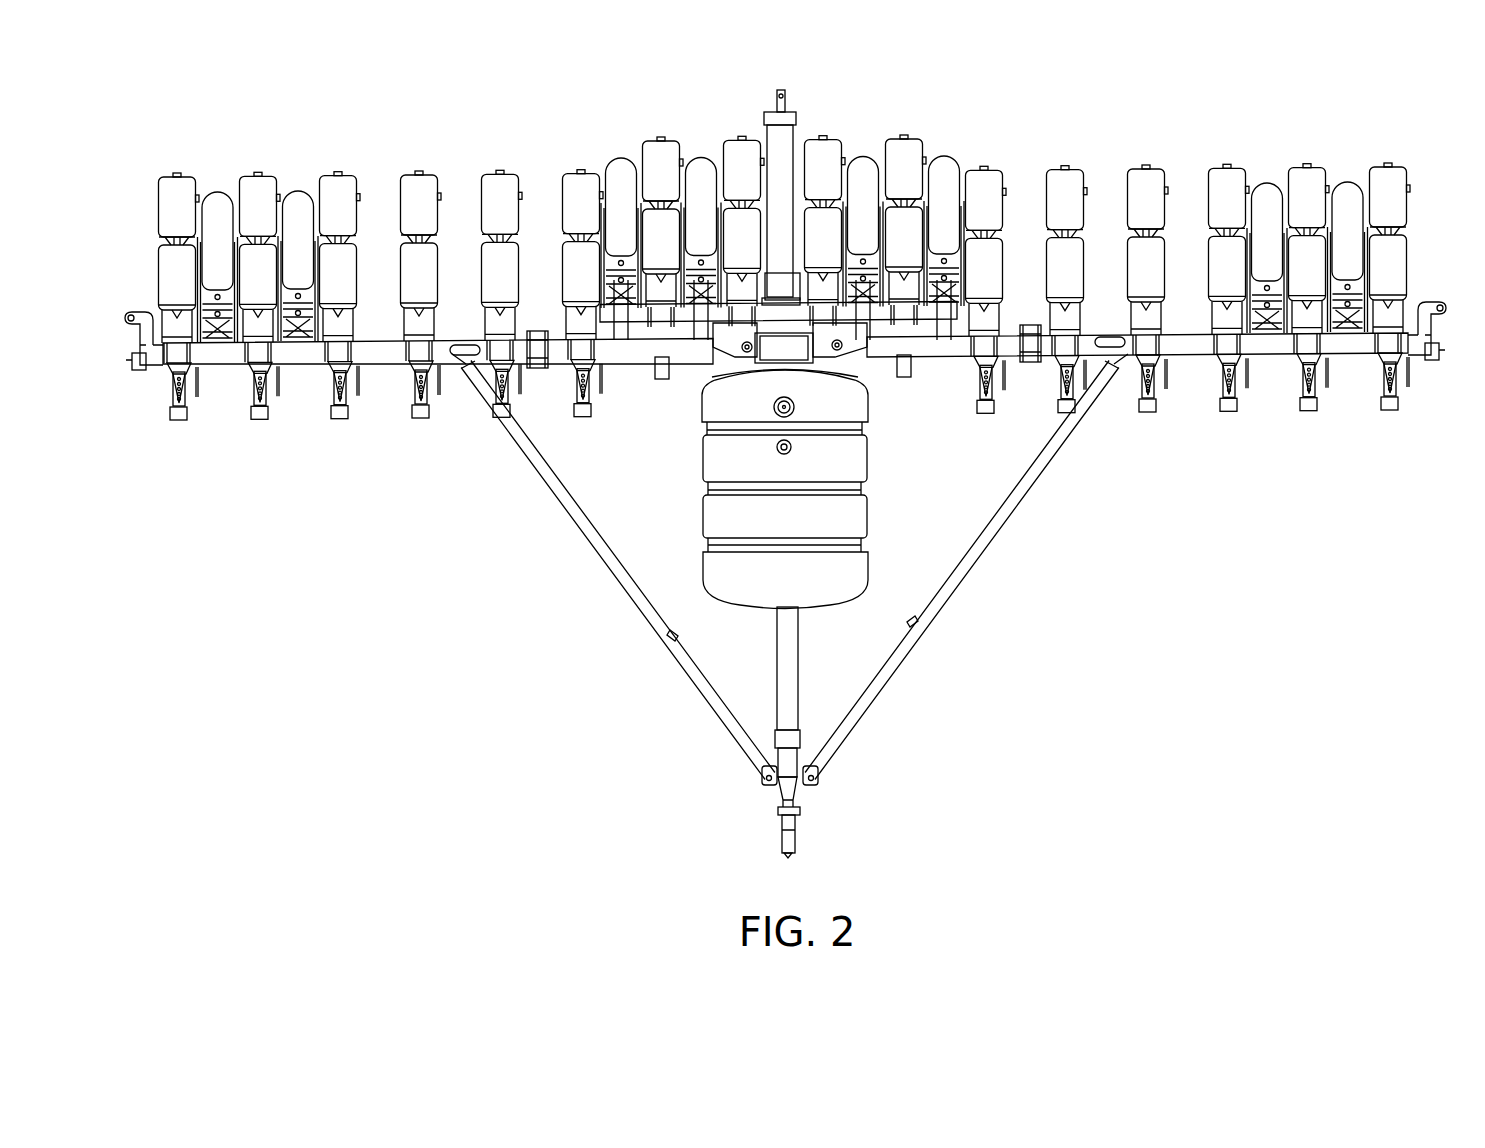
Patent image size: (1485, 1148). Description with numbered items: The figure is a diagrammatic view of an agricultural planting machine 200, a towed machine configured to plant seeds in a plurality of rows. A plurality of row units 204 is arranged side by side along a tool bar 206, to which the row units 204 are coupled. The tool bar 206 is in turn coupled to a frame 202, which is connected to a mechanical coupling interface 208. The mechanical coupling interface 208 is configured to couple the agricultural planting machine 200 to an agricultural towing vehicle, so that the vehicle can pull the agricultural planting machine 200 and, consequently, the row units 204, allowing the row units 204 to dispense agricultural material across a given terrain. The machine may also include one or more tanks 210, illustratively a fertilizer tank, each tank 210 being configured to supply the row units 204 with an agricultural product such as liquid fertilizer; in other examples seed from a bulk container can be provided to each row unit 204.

The agricultural planting machine 200 is at (785, 455).
The frame 202 is at (885, 690).
The row units 204 is at (327, 180).
The tool bar 206 is at (1182, 355).
The mechanical coupling interface 208 is at (783, 840).
The tank 210 is at (713, 522).